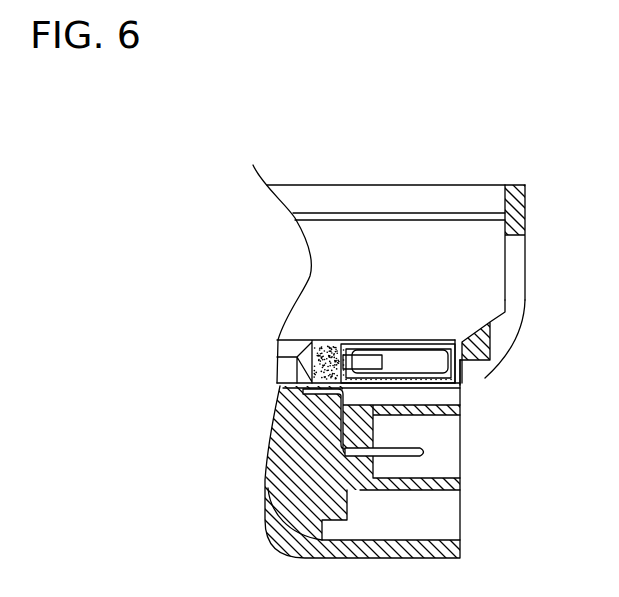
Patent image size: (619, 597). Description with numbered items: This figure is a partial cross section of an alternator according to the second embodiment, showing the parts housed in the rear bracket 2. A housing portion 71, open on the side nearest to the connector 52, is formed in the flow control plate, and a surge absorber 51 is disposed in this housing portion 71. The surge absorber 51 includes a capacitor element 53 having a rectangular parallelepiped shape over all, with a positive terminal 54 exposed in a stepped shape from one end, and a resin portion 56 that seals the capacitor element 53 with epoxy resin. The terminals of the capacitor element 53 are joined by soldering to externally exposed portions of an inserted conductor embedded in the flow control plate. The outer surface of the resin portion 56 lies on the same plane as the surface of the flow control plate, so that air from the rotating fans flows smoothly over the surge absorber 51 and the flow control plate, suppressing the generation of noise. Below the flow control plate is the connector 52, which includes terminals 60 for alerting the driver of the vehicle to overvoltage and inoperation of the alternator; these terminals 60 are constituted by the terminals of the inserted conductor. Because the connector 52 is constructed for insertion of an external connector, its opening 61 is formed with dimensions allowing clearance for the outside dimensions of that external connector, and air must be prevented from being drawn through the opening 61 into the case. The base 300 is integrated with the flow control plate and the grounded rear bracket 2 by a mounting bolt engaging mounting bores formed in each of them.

The rear bracket 2 is at (527, 207).
The surge absorber 51 is at (428, 335).
The connector 52 is at (487, 458).
The capacitor element 53 is at (408, 352).
The positive terminal 54 is at (368, 355).
The resin portion 56 is at (323, 350).
The terminals 60 is at (415, 450).
The opening 61 is at (395, 543).
The housing portion 71 is at (483, 378).
The base 300 is at (294, 402).